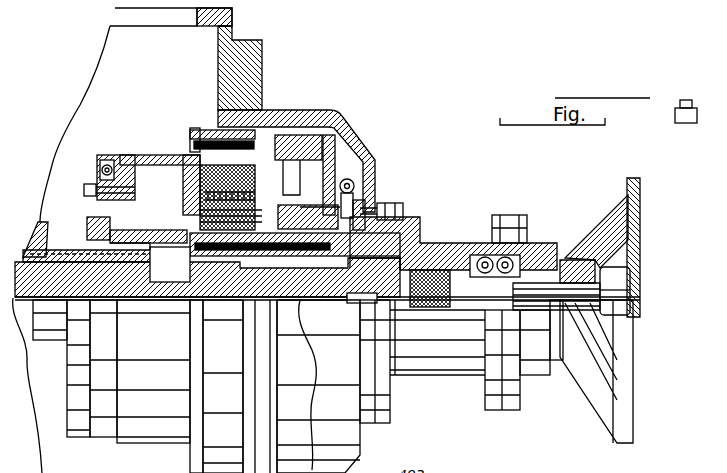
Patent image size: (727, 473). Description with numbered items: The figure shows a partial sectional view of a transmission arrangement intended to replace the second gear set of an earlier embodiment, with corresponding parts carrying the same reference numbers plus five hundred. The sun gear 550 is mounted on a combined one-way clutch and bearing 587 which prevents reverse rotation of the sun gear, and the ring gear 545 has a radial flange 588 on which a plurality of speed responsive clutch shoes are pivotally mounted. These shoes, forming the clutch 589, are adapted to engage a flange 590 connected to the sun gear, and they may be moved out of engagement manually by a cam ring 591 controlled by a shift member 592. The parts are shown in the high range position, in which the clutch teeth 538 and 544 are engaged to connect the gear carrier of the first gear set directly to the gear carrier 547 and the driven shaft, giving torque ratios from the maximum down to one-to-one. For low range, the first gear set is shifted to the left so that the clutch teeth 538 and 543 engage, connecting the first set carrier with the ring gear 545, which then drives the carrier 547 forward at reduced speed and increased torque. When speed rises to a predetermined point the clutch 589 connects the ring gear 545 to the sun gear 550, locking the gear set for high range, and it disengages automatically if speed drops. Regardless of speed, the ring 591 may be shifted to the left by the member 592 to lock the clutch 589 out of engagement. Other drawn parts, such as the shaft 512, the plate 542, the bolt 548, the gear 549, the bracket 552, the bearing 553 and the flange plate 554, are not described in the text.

The shaft 512 is at (317, 303).
The clutch teeth 538 is at (327, 275).
The plate 542 is at (90, 240).
The clutch teeth 543 is at (83, 227).
The clutch teeth 544 is at (147, 249).
The ring gear 545 is at (193, 133).
The gear carrier 547 is at (200, 177).
The bolt 548 is at (101, 168).
The gear 549 is at (205, 203).
The sun gear 550 is at (204, 215).
The bracket 552 is at (587, 253).
The bearing 553 is at (438, 252).
The flange plate 554 is at (410, 243).
The combined one-way clutch and bearing 587 is at (227, 303).
The radial flange 588 is at (280, 147).
The clutch 589 is at (334, 147).
The flange 590 is at (329, 173).
The cam ring 591 is at (296, 212).
The shift member 592 is at (350, 200).